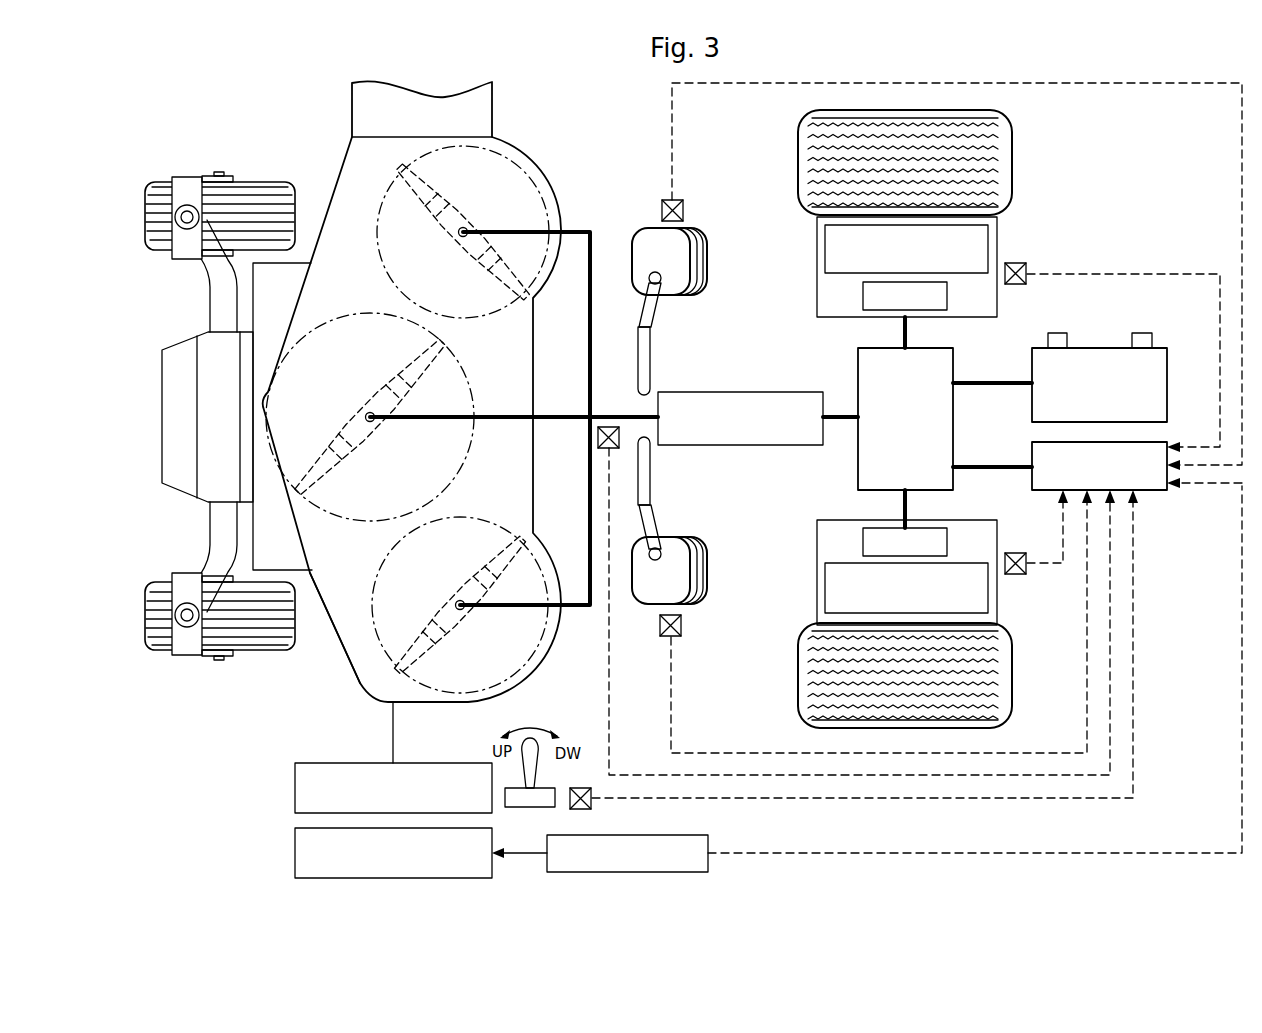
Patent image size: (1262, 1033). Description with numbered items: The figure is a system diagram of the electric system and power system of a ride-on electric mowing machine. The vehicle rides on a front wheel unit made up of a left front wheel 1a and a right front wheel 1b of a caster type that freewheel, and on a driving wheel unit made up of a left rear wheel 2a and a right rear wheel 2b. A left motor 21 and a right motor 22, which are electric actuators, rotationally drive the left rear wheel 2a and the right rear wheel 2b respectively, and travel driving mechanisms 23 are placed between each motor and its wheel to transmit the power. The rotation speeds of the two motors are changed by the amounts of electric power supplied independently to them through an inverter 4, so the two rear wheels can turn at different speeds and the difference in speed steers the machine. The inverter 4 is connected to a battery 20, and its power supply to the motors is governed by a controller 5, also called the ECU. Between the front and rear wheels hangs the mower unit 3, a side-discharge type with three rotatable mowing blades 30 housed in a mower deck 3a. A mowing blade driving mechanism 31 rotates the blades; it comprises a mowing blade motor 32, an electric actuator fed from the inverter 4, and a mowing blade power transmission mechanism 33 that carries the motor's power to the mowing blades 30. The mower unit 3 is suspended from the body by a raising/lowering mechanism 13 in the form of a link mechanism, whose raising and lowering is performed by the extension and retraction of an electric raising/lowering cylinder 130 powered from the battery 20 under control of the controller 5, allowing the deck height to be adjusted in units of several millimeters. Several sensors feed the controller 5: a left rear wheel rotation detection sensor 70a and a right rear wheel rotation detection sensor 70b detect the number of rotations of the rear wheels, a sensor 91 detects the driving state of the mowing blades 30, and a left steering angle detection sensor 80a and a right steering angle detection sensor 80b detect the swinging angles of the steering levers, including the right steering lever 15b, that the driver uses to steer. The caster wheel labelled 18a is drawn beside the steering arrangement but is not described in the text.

The left front wheel 1a is at (165, 648).
The right front wheel 1b is at (148, 197).
The mower unit 3 is at (311, 178).
The mower deck 3a is at (340, 640).
The mowing blades 30 is at (520, 296).
The mowing blade driving mechanism 31 is at (565, 408).
The mowing blade power transmission mechanism 33 is at (560, 428).
The mowing blade motor 32 is at (737, 445).
The sensor 91 is at (610, 412).
The right steering lever 15b is at (655, 369).
The caster wheel 18a is at (663, 543).
The left steering angle detection sensor 80a is at (660, 625).
The right steering angle detection sensor 80b is at (660, 210).
The left rear wheel 2a is at (797, 663).
The right rear wheel 2b is at (1013, 158).
The left motor 21 is at (863, 540).
The right motor 22 is at (823, 297).
The travel driving mechanisms 23 is at (825, 247).
The inverter 4 is at (858, 393).
The battery 20 is at (1168, 398).
The controller 5 is at (1150, 493).
The left rear wheel rotation detection sensor 70a is at (1012, 550).
The right rear wheel rotation detection sensor 70b is at (1017, 288).
The raising/lowering mechanism 13 is at (295, 790).
The raising/lowering cylinder 130 is at (295, 852).